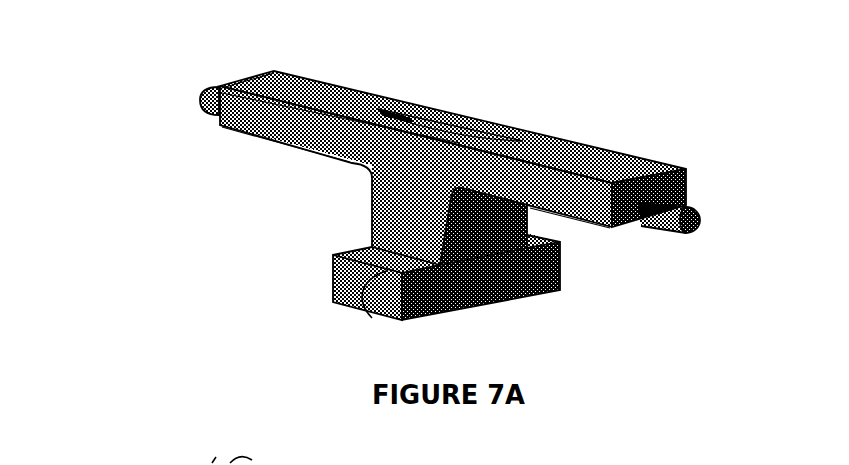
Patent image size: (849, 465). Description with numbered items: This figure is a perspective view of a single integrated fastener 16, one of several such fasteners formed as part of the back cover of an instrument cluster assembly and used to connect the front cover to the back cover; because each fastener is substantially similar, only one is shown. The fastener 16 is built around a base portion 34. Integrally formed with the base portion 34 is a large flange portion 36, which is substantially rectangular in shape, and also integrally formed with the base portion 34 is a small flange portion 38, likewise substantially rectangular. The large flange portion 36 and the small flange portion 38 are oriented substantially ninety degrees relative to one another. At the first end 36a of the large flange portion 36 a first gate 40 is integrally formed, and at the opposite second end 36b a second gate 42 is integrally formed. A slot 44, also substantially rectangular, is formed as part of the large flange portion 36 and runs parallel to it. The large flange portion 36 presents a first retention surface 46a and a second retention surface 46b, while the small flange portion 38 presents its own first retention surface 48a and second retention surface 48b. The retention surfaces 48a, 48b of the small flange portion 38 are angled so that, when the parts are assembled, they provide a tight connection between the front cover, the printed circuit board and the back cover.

The integrated fastener 16 is at (114, 272).
The base portion 34 is at (372, 225).
The large flange portion 36 is at (352, 92).
The first end of the large flange portion 36a is at (650, 146).
The second end of the large flange portion 36b is at (290, 78).
The small flange portion 38 is at (453, 292).
The first gate 40 is at (692, 233).
The second gate 42 is at (204, 92).
The slot 44 is at (480, 118).
The first retention surface 46a is at (590, 228).
The second retention surface 46b is at (247, 137).
The first retention surface of the small flange portion 48a is at (373, 318).
The second retention surface of the small flange portion 48b is at (560, 267).